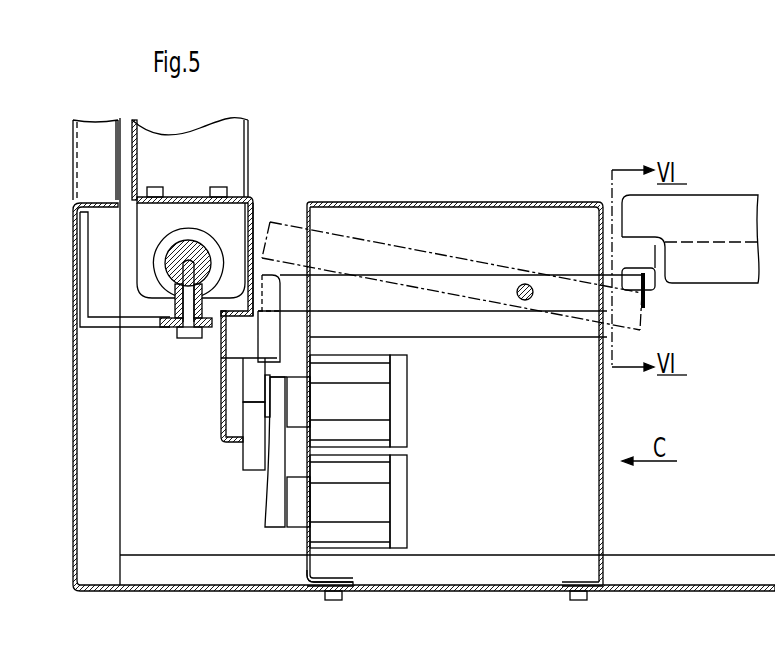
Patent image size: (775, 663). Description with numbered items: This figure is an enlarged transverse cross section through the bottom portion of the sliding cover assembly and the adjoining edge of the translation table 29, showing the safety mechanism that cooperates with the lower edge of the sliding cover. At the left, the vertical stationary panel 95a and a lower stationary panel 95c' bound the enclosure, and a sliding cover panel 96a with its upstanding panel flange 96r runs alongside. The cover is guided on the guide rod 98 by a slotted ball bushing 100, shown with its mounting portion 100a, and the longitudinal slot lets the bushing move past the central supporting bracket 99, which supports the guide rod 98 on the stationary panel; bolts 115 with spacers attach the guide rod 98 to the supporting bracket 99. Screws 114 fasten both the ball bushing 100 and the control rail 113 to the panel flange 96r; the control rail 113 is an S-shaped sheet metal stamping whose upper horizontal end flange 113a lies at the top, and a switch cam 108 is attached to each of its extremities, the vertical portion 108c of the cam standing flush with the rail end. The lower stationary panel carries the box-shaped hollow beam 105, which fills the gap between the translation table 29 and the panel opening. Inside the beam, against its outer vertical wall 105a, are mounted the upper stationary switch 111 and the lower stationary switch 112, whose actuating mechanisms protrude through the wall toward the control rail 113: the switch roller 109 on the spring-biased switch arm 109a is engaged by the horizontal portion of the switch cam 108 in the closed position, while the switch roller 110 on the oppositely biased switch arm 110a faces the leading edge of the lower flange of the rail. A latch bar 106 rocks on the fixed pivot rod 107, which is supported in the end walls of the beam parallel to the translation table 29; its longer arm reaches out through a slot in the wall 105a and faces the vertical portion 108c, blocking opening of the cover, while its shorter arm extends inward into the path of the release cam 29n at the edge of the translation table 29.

The vertical stationary panel 95a is at (108, 140).
The bottom plate of housing 95c' is at (424, 421).
The channel member 96a is at (220, 140).
The panel flange 96r is at (237, 197).
The screws 114 is at (223, 187).
The bracket plate 100a is at (228, 222).
The ball bushing 100 is at (258, 215).
The upper horizontal end flange 113a is at (203, 203).
The guide rod 98 is at (170, 277).
The bolts 115 is at (192, 333).
The central supporting bracket 99 is at (97, 323).
The box-shaped hollow beam 105 is at (420, 202).
The outer vertical wall 105a is at (308, 570).
The latch bar 106 is at (485, 287).
The fixed pivot rod 107 is at (526, 300).
The switch cam 108 is at (290, 298).
The vertical portion 108c is at (265, 323).
The switch roller 109 is at (257, 375).
The switch roller 110 is at (255, 458).
The switch arm 110a is at (277, 507).
The switch arm 109a is at (278, 405).
The upper stationary switch 111 is at (373, 372).
The lower stationary switch 112 is at (383, 530).
The control rail 113 is at (216, 412).
The translation table 29 is at (717, 207).
The release cam 29n is at (650, 283).